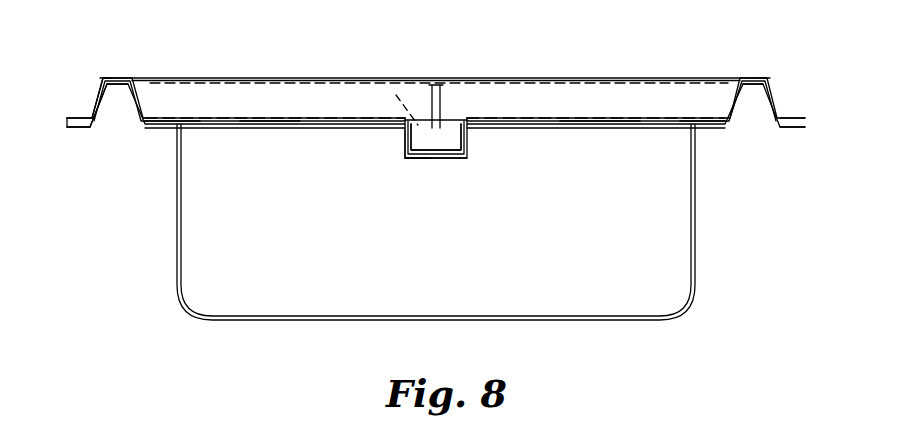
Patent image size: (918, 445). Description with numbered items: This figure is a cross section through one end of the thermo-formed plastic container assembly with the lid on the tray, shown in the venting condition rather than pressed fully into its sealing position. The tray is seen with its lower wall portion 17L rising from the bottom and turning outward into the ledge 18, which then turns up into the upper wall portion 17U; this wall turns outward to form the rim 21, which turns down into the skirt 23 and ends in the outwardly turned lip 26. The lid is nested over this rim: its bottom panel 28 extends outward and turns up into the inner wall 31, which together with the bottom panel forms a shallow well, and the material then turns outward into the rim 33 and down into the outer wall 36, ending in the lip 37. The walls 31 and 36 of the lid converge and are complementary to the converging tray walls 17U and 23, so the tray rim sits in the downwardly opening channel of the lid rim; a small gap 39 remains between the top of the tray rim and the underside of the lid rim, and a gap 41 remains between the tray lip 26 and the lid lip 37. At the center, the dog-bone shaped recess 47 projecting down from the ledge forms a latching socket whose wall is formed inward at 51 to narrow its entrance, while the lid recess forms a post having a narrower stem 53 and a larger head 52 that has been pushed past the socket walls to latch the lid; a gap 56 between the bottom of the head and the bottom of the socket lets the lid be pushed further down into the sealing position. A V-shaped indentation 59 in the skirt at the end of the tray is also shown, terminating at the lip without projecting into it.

The lower wall portion 17L is at (177, 223).
The upper wall portion 17U is at (130, 106).
The ledge 18 is at (155, 121).
The rim 21 is at (118, 88).
The skirt 23 is at (112, 111).
The lip 26 is at (78, 129).
The bottom panel 28 is at (180, 118).
The inner wall 31 is at (140, 93).
The rim 33 is at (486, 78).
The outer wall 36 is at (97, 100).
The lip 37 is at (79, 117).
The gap 39 is at (108, 78).
The gap 41 is at (67, 121).
The recess 47 is at (414, 164).
The socket wall 51 is at (420, 143).
The head 52 is at (441, 158).
The stem 53 is at (401, 92).
The gap 56 is at (458, 156).
The indentation 59 is at (433, 82).